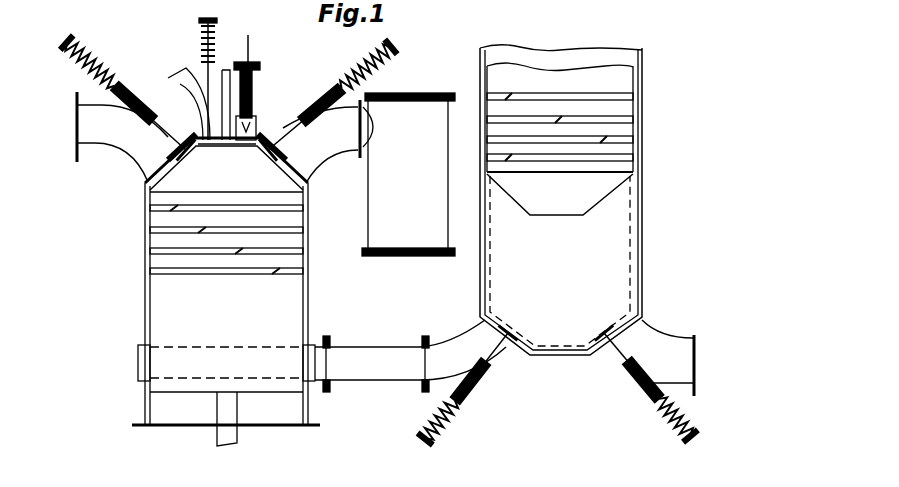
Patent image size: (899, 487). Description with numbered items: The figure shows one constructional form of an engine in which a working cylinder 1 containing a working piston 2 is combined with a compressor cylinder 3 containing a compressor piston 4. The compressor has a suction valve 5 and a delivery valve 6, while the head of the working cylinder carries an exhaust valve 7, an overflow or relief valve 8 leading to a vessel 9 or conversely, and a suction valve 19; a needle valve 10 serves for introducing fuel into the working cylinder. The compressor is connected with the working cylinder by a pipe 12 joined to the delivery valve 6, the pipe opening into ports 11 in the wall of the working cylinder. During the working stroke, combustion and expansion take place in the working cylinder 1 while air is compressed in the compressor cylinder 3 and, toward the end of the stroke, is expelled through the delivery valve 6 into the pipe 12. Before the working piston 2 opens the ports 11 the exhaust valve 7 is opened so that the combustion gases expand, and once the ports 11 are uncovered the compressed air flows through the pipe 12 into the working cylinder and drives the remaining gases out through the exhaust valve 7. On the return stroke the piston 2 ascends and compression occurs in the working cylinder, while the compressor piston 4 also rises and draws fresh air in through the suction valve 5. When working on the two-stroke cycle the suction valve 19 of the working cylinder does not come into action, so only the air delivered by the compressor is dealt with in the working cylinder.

The working cylinder 1 is at (146, 297).
The working piston 2 is at (191, 394).
The compressor cylinder 3 is at (480, 284).
The compressor piston 4 is at (603, 192).
The suction valve of the compressor 5 is at (612, 352).
The delivery valve of the compressor 6 is at (504, 356).
The exhaust valve of the working cylinder 7 is at (193, 142).
The overflow or relief valve 8 is at (281, 136).
The vessel 9 is at (432, 101).
The needle valve 10 is at (256, 122).
The ports 11 is at (335, 341).
The pipe 12 is at (366, 374).
The suction valve 19 is at (205, 143).